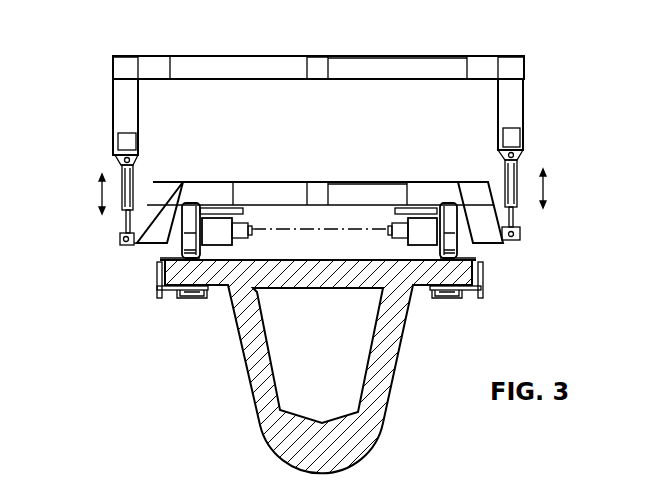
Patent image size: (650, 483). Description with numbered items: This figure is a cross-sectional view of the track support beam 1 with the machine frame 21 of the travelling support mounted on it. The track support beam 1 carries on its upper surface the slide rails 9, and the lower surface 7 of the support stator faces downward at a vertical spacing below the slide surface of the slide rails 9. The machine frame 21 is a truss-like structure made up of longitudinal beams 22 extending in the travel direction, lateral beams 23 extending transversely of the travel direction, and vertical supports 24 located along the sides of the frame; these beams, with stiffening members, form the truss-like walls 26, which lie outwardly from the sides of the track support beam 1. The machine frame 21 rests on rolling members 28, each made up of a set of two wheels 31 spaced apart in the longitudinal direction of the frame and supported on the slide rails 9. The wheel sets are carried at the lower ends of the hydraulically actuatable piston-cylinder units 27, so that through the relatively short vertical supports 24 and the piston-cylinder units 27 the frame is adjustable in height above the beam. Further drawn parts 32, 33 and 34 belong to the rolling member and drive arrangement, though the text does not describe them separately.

The track support beam 1 is at (268, 440).
The lower surface of the support stator 7 is at (195, 297).
The slide rails 9 is at (181, 257).
The machine frame 21 is at (243, 56).
The longitudinal beams 22 is at (125, 63).
The lateral beams 23 is at (398, 55).
The vertical supports 24 is at (517, 101).
The truss-like walls 26 is at (113, 117).
The piston-cylinder units 27 is at (123, 176).
The rolling members 28 is at (228, 182).
The wheels 31 is at (190, 203).
The shaft 32 is at (360, 220).
The drive units 33 is at (247, 216).
The beam section 34 is at (340, 187).